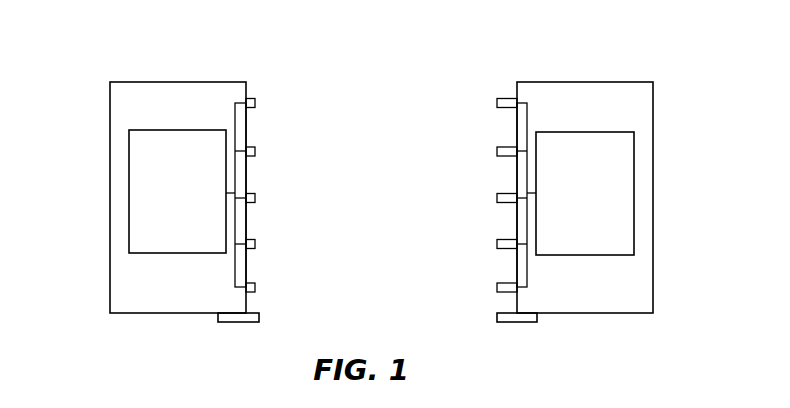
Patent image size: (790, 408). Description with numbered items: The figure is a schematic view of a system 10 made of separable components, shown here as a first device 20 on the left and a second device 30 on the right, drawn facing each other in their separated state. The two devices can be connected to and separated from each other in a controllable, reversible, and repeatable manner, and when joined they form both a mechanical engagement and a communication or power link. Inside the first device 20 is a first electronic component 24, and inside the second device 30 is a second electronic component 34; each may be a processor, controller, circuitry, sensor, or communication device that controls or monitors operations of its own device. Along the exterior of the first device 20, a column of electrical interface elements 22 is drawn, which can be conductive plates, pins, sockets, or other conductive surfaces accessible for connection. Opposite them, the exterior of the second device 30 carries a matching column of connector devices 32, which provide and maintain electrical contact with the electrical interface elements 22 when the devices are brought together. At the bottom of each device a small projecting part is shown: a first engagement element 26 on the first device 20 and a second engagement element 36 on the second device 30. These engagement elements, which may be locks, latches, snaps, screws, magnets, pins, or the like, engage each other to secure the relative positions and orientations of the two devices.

The system 10 is at (76, 71).
The first device 20 is at (223, 82).
The electrical interface elements 22 is at (255, 151).
The first electronic component 24 is at (167, 204).
The first engagement element 26 is at (218, 318).
The second device 30 is at (590, 82).
The connector devices 32 is at (497, 151).
The second electronic component 34 is at (574, 204).
The second engagement element 36 is at (537, 318).